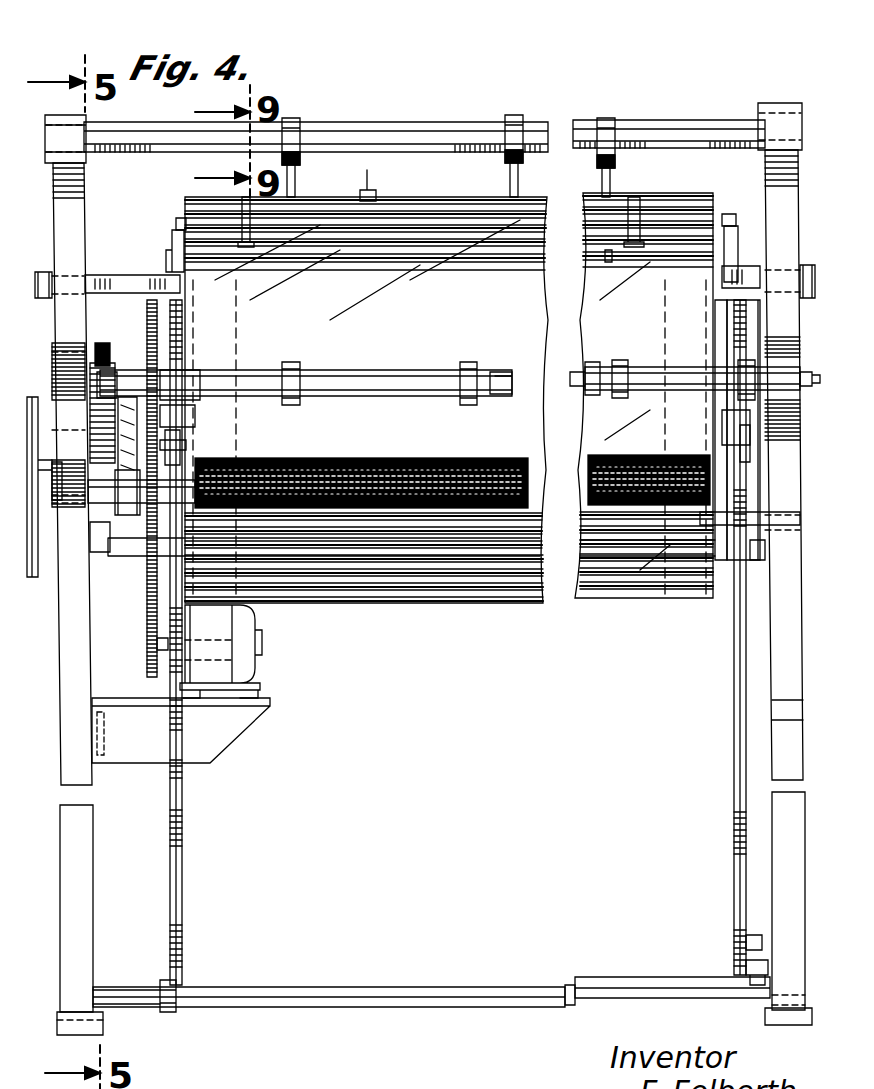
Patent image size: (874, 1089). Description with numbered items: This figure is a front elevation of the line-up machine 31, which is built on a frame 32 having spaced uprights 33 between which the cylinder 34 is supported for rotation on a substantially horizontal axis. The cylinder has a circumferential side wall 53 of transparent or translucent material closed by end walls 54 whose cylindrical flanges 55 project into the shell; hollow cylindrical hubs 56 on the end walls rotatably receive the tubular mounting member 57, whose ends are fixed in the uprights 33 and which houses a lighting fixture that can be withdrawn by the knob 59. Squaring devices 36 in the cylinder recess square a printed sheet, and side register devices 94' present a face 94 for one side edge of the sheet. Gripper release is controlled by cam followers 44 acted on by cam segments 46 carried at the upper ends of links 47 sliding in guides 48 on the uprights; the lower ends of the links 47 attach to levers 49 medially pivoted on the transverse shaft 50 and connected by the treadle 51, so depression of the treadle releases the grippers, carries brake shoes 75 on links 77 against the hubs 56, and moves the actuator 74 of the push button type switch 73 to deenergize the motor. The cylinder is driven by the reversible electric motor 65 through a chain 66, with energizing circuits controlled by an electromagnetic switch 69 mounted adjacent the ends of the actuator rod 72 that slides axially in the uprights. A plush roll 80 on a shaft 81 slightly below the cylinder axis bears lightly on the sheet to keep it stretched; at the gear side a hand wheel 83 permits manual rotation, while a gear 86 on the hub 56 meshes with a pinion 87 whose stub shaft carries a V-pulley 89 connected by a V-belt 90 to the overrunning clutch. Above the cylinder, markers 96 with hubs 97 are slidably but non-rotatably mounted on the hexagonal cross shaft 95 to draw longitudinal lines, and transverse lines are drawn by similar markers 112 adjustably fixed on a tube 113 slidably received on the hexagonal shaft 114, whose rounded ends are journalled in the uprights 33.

The line-up machine 31 is at (419, 114).
The frame 32 is at (103, 826).
The uprights 33 is at (80, 745).
The cylinder 34 is at (455, 195).
The squaring devices 36 is at (368, 188).
The cam followers 44 is at (178, 220).
The cam segments 46 is at (174, 250).
The links 47 is at (168, 305).
The guides 48 is at (128, 275).
The levers 49 is at (160, 982).
The transverse shaft 50 is at (120, 990).
The treadle 51 is at (310, 988).
The circumferential side wall 53 is at (470, 305).
The end walls 54 is at (203, 322).
The cylindrical flanges 55 is at (238, 328).
The hollow cylindrical hubs 56 is at (716, 410).
The tubular mounting member 57 is at (763, 430).
The knob 59 is at (815, 378).
The reversible electric motor 65 is at (255, 630).
The chain 66 is at (147, 624).
The electromagnetic switch 69 is at (148, 598).
The actuator rod 72 is at (664, 555).
The push button type switch 73 is at (748, 942).
The actuator 74 is at (750, 962).
The brake shoes 75 is at (196, 425).
The link 77 is at (192, 458).
The plush roll 80 is at (412, 458).
The shaft 81 is at (750, 492).
The hand wheel 83 is at (32, 397).
The gear 86 is at (104, 343).
The pinion 87 is at (78, 500).
The V-pulley 89 is at (133, 366).
The V-belt 90 is at (118, 512).
The face 94 is at (429, 223).
The side register devices 94' is at (642, 207).
The cross shaft 95 is at (700, 122).
The markers 96 is at (298, 118).
The hub 97 is at (615, 118).
The markers 112 is at (302, 360).
The tube 113 is at (388, 368).
The hexagonal shaft 114 is at (500, 396).